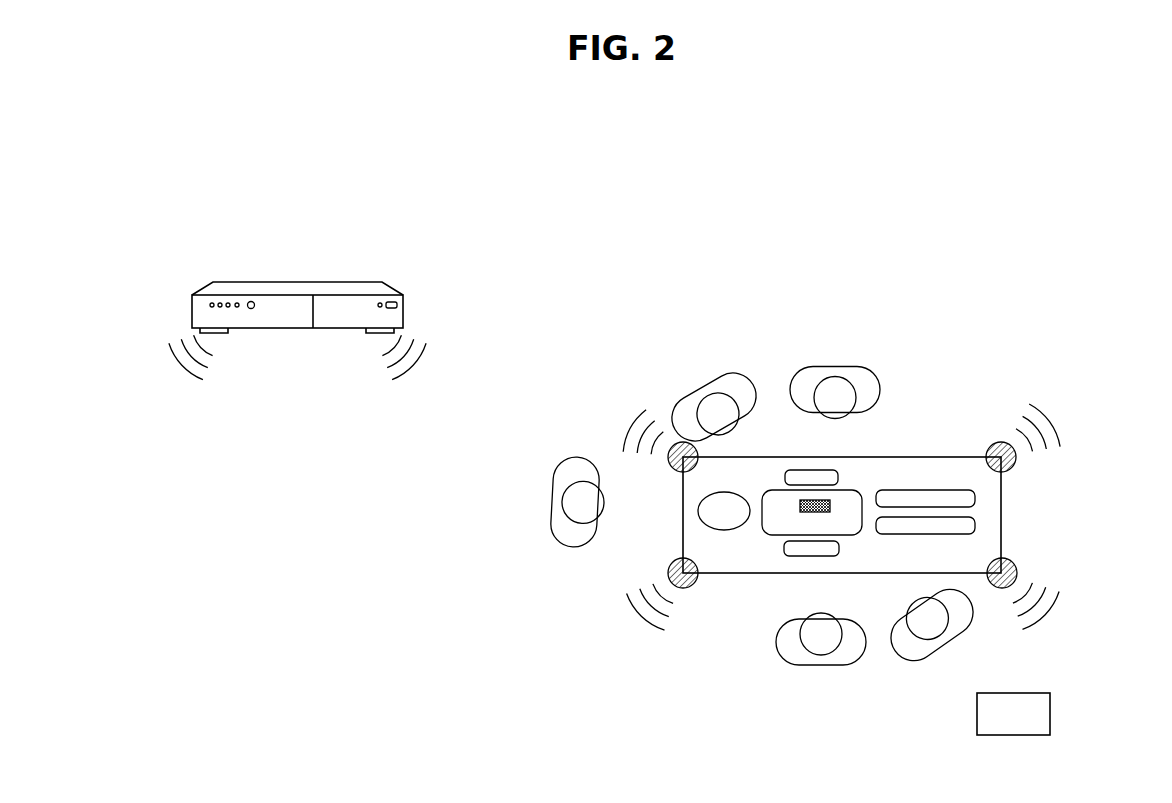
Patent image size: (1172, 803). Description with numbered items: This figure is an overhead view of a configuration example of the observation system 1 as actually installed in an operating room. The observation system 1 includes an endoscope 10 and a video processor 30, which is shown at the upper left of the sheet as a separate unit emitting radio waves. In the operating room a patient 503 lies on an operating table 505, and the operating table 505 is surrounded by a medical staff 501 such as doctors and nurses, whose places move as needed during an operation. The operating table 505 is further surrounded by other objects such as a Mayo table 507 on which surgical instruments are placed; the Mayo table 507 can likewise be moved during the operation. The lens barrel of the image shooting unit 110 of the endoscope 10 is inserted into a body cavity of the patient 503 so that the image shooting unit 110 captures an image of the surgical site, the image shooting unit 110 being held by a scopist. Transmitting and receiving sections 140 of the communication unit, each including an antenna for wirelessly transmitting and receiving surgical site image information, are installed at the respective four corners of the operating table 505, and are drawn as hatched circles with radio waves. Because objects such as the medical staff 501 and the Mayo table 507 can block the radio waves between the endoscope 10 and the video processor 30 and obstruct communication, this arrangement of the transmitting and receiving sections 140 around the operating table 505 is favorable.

The observation system 1 is at (308, 148).
The endoscope 10 is at (961, 315).
The video processor 30 is at (345, 282).
The image shooting unit 110 is at (832, 498).
The transmitting and receiving sections 140 is at (672, 446).
The medical staff 501 is at (712, 380).
The patient 503 is at (700, 520).
The operating table 505 is at (1004, 487).
The Mayo table 507 is at (1050, 712).